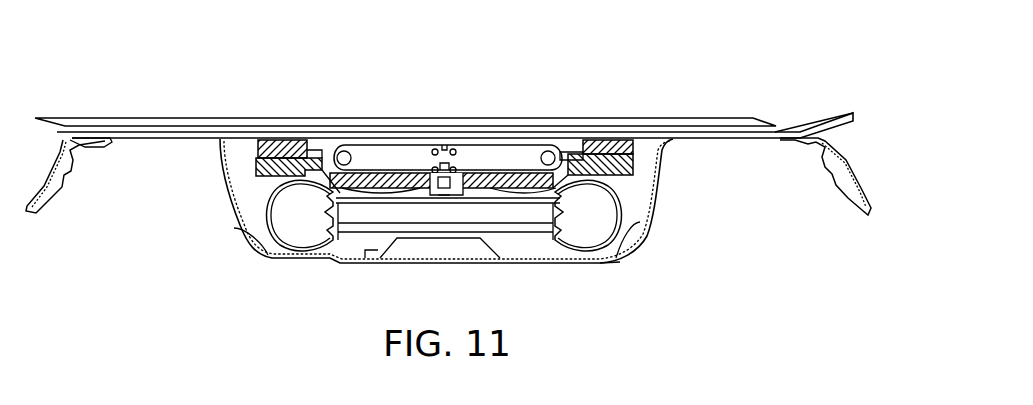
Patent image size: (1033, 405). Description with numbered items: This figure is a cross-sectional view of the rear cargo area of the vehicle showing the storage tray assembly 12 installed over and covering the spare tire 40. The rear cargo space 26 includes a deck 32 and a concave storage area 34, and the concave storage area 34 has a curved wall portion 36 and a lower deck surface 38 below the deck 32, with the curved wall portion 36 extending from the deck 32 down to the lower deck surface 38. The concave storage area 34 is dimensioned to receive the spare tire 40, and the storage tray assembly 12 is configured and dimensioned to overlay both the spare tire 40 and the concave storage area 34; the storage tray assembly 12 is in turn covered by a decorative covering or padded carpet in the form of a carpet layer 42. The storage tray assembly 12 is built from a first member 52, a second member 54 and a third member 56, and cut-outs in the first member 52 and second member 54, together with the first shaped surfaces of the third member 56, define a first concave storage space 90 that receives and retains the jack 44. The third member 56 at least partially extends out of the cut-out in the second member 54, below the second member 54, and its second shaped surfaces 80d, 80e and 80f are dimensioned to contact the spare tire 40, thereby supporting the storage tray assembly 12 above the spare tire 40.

The rear cargo space 26 is at (731, 45).
The storage tray assembly 12 is at (636, 153).
The deck 32 is at (806, 140).
The concave storage area 34 is at (650, 207).
The curved wall portion 36 is at (622, 254).
The lower deck surface 38 is at (243, 238).
The spare tire 40 is at (362, 238).
The carpet layer 42 is at (182, 118).
The jack 44 is at (506, 158).
The first member 52 is at (270, 148).
The second member 54 is at (256, 168).
The third member 56 is at (366, 174).
The first concave storage space 90 is at (318, 150).
The second shaped surface 80d is at (335, 217).
The second shaped surface 80e is at (458, 218).
The second shaped surface 80f is at (555, 206).